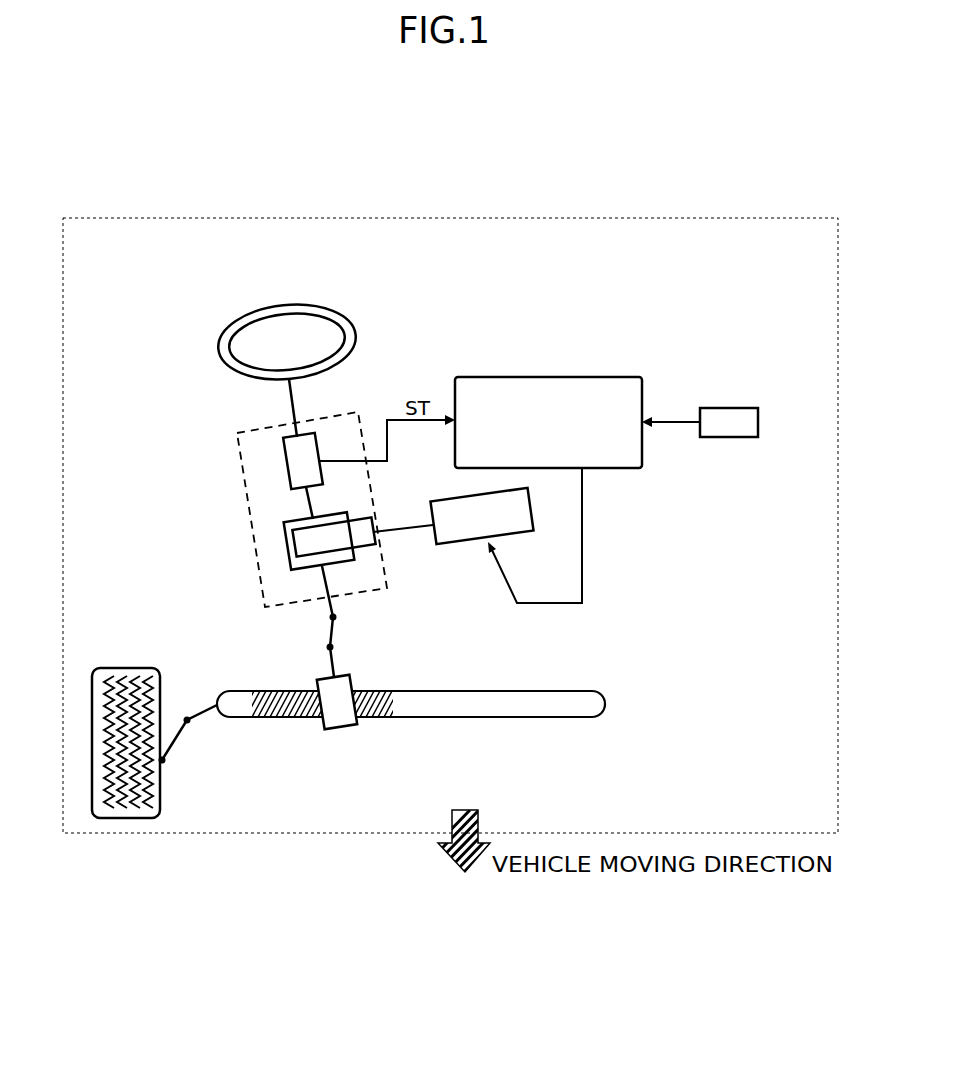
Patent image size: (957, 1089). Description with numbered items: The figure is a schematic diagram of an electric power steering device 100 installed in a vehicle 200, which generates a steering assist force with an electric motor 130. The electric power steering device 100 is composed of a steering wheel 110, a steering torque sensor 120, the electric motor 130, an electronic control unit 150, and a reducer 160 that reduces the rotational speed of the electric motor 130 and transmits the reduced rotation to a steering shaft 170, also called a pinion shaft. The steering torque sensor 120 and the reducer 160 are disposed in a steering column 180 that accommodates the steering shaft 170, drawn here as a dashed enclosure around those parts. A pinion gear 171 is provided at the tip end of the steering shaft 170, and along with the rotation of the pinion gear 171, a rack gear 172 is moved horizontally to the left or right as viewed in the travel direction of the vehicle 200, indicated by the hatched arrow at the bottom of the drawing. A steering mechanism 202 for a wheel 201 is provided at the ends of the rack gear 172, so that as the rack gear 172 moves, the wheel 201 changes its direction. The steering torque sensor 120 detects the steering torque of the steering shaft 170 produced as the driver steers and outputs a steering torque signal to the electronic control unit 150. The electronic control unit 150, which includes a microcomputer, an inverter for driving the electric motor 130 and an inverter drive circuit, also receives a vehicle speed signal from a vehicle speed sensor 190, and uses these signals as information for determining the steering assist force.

The electric power steering device 100 is at (400, 312).
The steering wheel 110 is at (270, 306).
The steering torque sensor 120 is at (286, 466).
The electric motor 130 is at (431, 502).
The electronic control unit 150 is at (530, 377).
The reducer 160 is at (291, 548).
The steering shaft 170 is at (297, 531).
The pinion gear 171 is at (335, 731).
The rack gear 172 is at (480, 689).
The steering column 180 is at (363, 416).
The vehicle speed sensor 190 is at (748, 408).
The vehicle 200 is at (590, 218).
The wheel 201 is at (123, 668).
The steering mechanism 202 is at (188, 737).